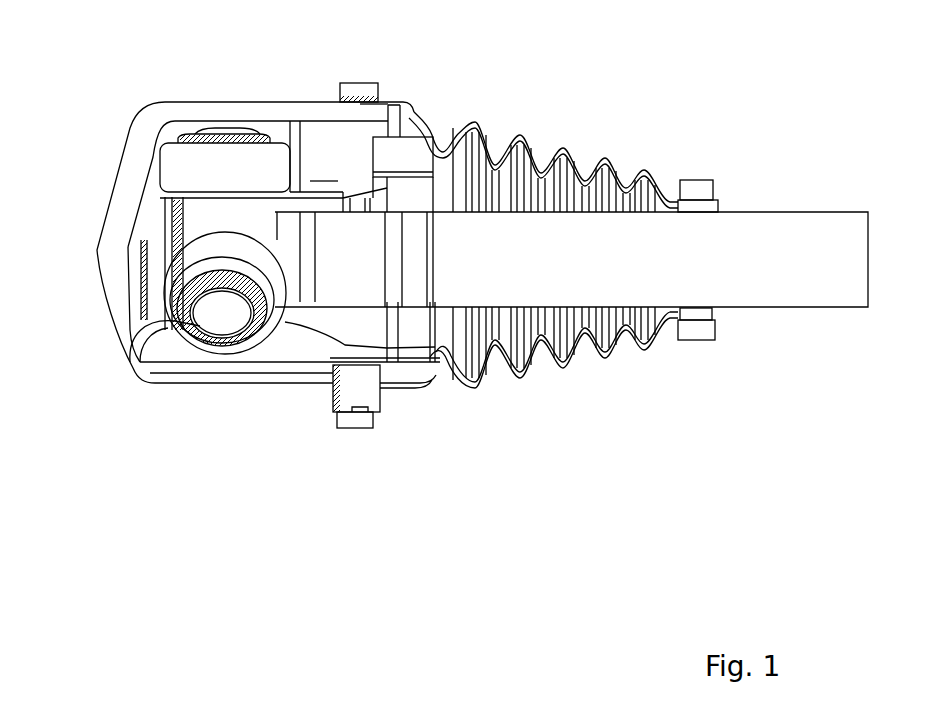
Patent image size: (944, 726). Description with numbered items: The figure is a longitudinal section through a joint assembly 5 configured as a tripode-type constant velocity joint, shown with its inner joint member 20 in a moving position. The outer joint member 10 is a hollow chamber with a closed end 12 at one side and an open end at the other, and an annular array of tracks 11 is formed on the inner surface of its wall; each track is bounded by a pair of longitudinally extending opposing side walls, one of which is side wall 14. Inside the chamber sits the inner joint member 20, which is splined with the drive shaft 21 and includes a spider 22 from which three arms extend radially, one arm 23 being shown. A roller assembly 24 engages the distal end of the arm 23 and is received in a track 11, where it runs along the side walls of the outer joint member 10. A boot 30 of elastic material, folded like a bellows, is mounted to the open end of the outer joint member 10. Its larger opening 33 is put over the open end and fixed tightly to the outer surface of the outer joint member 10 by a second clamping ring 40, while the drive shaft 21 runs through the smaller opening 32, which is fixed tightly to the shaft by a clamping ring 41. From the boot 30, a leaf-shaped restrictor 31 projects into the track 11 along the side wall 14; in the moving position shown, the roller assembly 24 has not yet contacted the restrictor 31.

The joint assembly 5 is at (287, 432).
The outer joint member 10 is at (183, 108).
The track 11 is at (287, 107).
The closed end 12 is at (100, 252).
The side wall 14 is at (314, 156).
The inner joint member 20 is at (297, 265).
The drive shaft 21 is at (800, 232).
The spider 22 is at (165, 208).
The arm 23 is at (235, 107).
The roller assembly 24 is at (157, 327).
The boot 30 is at (567, 143).
The restrictor 31 is at (408, 135).
The smaller opening 32 is at (718, 213).
The larger opening 33 is at (334, 100).
The second clamping ring 40 is at (357, 90).
The clamping ring 41 is at (698, 340).